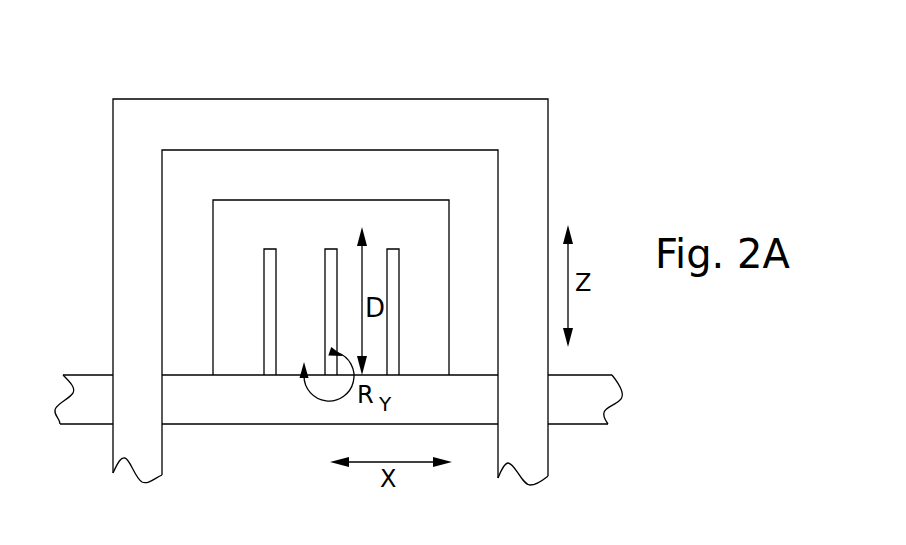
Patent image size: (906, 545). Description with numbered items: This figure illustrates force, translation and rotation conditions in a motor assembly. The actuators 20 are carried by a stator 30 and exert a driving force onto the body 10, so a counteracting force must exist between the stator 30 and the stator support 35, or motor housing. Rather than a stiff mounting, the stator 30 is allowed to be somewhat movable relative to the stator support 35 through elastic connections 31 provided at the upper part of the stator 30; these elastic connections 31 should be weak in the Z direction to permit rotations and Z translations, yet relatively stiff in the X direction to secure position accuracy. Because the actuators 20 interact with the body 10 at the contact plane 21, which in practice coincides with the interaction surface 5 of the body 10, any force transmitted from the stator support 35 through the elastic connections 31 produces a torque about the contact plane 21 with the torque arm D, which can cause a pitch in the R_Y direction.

The stator support 35 is at (520, 112).
The elastic connections 31 is at (449, 226).
The stator 30 is at (296, 212).
The actuators 20 is at (243, 287).
The interaction surface 5 is at (194, 375).
The contact plane 21 is at (252, 373).
The body 10 is at (583, 392).